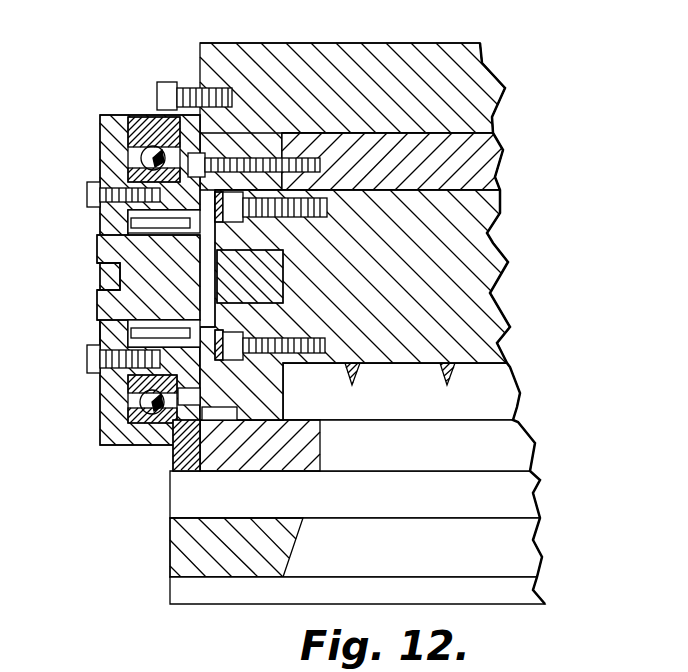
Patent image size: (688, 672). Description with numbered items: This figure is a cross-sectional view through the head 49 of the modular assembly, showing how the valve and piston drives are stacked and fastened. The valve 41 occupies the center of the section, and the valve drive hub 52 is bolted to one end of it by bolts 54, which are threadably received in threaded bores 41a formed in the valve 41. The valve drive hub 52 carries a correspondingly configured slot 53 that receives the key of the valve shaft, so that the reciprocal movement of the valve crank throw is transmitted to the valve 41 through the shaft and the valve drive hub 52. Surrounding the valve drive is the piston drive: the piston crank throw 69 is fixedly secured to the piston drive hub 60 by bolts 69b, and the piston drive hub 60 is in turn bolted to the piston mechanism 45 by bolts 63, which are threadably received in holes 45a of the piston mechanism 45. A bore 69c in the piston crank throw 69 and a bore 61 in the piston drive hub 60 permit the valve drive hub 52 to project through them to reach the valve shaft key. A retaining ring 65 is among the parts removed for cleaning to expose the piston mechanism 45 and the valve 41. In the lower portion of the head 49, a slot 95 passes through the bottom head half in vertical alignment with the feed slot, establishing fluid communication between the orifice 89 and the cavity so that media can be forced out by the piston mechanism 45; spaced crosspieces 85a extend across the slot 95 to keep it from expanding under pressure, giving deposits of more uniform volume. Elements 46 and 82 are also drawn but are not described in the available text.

The valve 41 is at (482, 252).
The threaded bores 41a is at (305, 218).
The piston mechanism 45 is at (492, 152).
The holes 45a is at (308, 184).
The plate surface 46 is at (492, 172).
The head 49 is at (446, 52).
The valve drive hub 52 is at (102, 306).
The slot 53 is at (102, 278).
The bolts 54 is at (322, 210).
The piston drive hub 60 is at (170, 447).
The bore 61 is at (125, 238).
The bolts 63 is at (153, 118).
The retaining ring 65 is at (185, 80).
The piston crank throw 69 is at (100, 128).
The bolts 69b is at (87, 195).
The bore 69c is at (102, 324).
The base plate 82 is at (530, 493).
The crosspieces 85a is at (450, 372).
The orifice 89 is at (532, 545).
The slot 95 is at (522, 452).